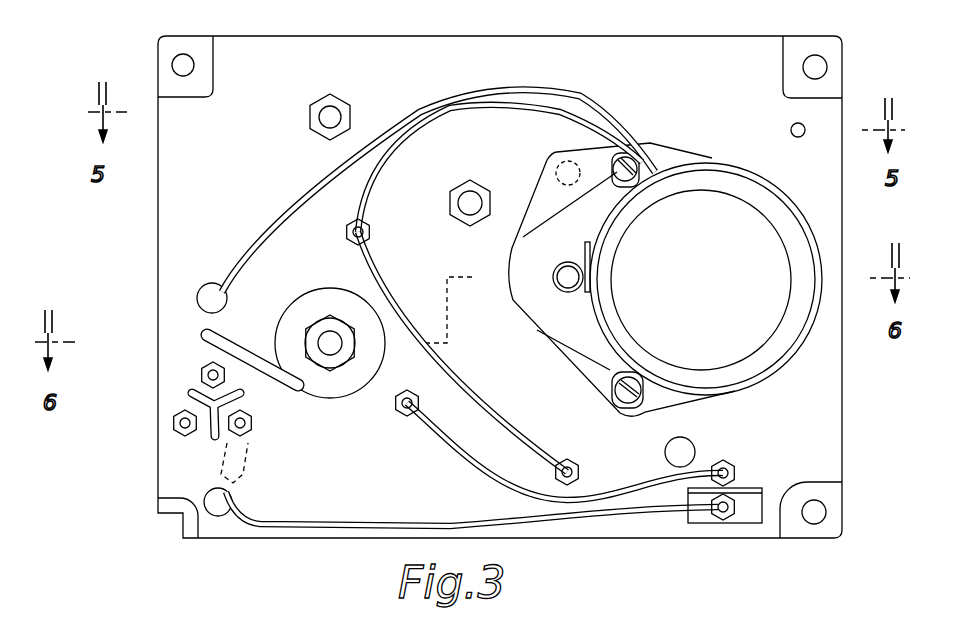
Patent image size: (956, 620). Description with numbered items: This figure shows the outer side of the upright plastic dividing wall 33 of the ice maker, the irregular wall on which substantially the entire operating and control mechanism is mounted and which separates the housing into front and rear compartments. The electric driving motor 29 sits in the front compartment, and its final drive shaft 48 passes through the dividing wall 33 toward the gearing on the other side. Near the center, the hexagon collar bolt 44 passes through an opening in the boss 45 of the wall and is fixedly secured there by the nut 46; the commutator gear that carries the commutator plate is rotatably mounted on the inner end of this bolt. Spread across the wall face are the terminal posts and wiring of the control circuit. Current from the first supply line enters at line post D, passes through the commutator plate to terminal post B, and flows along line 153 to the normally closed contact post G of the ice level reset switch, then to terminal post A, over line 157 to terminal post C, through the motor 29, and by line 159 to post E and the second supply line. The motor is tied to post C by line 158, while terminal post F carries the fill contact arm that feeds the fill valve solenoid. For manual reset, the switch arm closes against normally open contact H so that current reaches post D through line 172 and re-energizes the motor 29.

The dividing wall 33 is at (512, 50).
The electric driving motor 29 is at (706, 160).
The final drive shaft 48 is at (562, 291).
The hexagon collar bolt 44 is at (326, 334).
The boss 45 is at (285, 334).
The nut 46 is at (347, 374).
The line 157 is at (490, 421).
The line 158 is at (424, 132).
The line 159 is at (262, 228).
The line 153 is at (461, 471).
The line 172 is at (295, 527).
The terminal post A is at (579, 468).
The terminal post B is at (402, 415).
The terminal post C is at (349, 245).
The line post D is at (252, 426).
The post E is at (205, 369).
The terminal post F is at (177, 428).
The normally closed contact post G is at (734, 465).
The normally open contact H is at (722, 521).